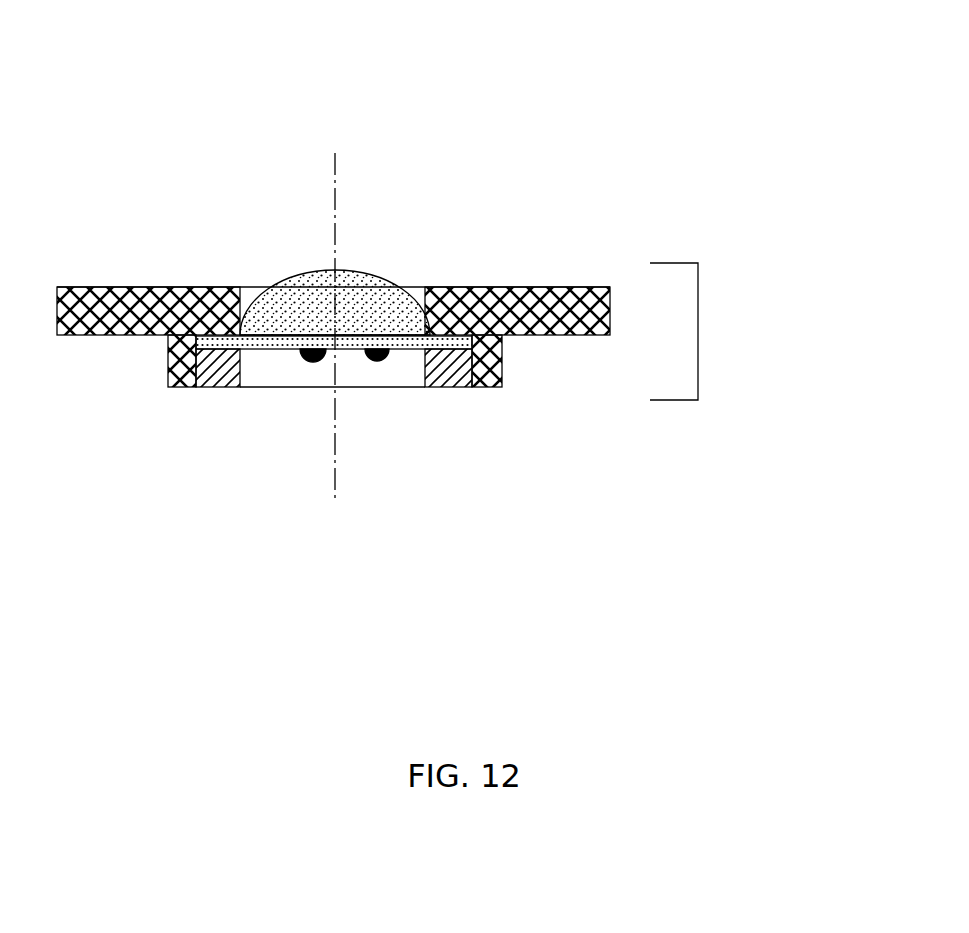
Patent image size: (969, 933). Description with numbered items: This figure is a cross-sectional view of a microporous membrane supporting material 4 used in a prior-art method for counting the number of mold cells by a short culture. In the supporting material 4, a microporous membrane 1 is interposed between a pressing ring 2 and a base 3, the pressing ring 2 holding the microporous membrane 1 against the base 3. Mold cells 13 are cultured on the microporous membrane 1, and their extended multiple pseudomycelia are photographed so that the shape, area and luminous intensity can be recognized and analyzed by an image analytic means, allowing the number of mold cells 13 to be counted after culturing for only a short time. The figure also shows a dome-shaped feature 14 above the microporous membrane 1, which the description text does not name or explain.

The housing base 1 is at (216, 356).
The housing side wall 2 is at (454, 367).
The cover plate 3 is at (162, 287).
The light emitting module 4 is at (697, 336).
The LED chip 13 is at (383, 362).
The lens dome 14 is at (378, 278).